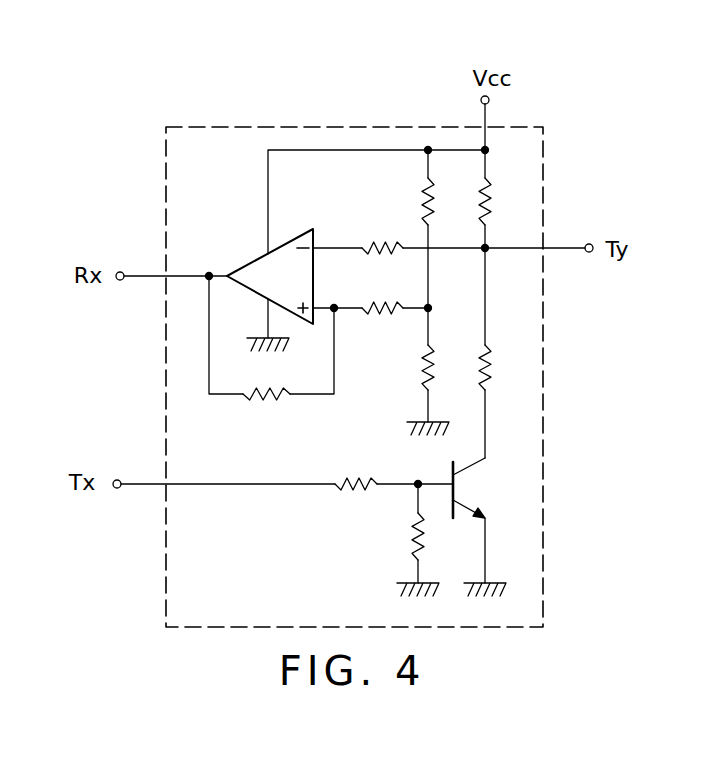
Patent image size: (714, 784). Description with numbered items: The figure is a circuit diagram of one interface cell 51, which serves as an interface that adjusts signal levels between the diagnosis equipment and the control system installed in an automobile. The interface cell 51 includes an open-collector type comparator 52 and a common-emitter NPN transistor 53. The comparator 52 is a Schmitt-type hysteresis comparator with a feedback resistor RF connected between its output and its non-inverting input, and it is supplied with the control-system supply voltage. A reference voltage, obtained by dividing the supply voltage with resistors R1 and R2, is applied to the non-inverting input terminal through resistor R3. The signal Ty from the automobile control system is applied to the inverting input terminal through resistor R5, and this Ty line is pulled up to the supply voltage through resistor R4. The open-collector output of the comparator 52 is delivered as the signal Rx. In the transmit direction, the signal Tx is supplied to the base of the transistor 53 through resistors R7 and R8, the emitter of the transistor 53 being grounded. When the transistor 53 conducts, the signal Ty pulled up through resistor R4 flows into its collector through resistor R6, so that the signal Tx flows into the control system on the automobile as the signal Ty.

The interface cell 51 is at (546, 207).
The open-collector type comparator 52 is at (255, 257).
The common-emitter NPN transistor 53 is at (477, 488).
The resistor R1 is at (443, 229).
The resistor R2 is at (438, 371).
The resistor R3 is at (382, 292).
The resistor R4 is at (502, 199).
The resistor R5 is at (382, 235).
The resistor R6 is at (501, 353).
The resistor R7 is at (356, 473).
The resistor R8 is at (407, 540).
The feedback resistor RF is at (271, 352).